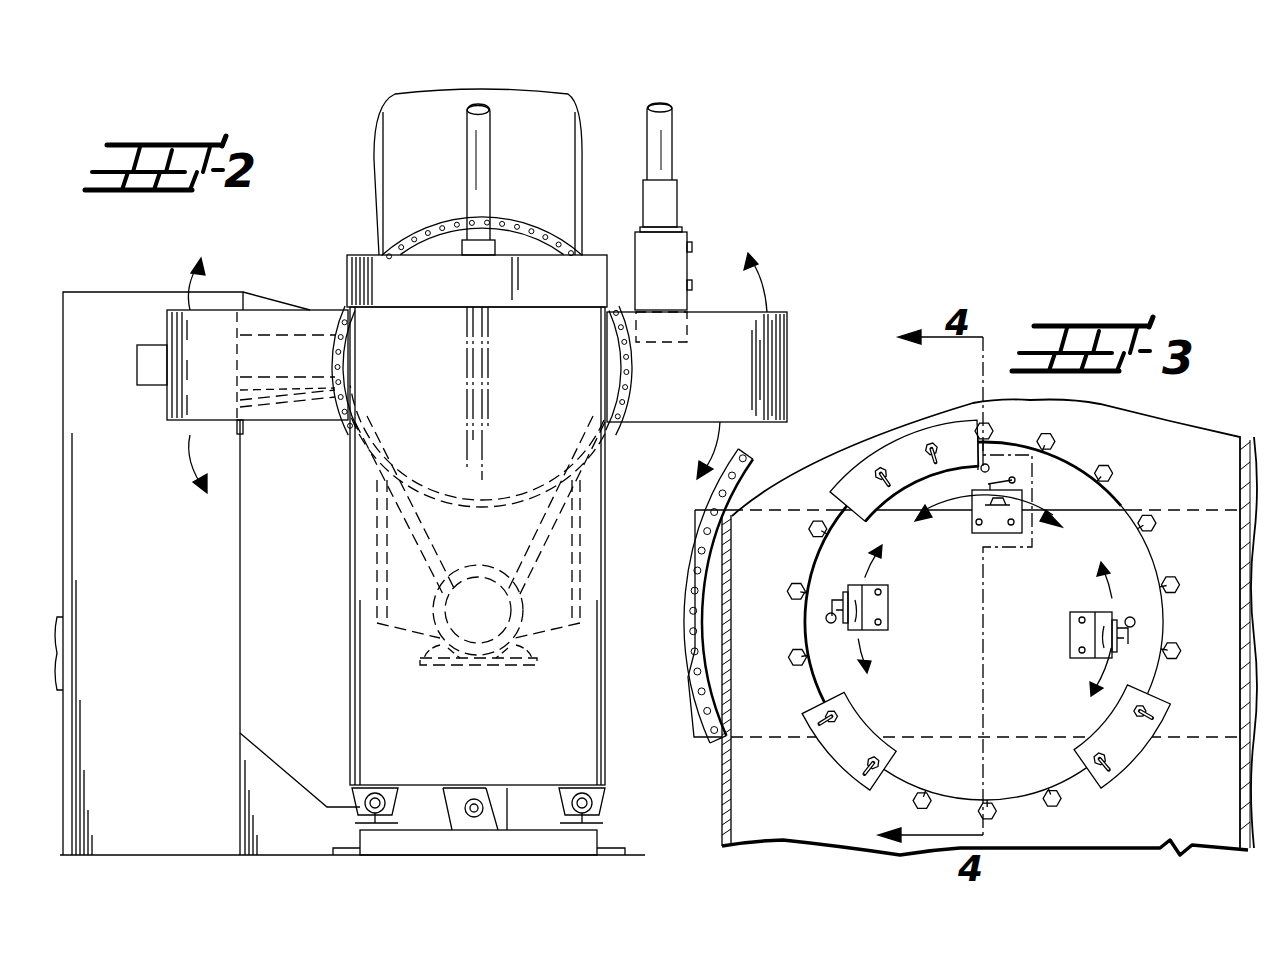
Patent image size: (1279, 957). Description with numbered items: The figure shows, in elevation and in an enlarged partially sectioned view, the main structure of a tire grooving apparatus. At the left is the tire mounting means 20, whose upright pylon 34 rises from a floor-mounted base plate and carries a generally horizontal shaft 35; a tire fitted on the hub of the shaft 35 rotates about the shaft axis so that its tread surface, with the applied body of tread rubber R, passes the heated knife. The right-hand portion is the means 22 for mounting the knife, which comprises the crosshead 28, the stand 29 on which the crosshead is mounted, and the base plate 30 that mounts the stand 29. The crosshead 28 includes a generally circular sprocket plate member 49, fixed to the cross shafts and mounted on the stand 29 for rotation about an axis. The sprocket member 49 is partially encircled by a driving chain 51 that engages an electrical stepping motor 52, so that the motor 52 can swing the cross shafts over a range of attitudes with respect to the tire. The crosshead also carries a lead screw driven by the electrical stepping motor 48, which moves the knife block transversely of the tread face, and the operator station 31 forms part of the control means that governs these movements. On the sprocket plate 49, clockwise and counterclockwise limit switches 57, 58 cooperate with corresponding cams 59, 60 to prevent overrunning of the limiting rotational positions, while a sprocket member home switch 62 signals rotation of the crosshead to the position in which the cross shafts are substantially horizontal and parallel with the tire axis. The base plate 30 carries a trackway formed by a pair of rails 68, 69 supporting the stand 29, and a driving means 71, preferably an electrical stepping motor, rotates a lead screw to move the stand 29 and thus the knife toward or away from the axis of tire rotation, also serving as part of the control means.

In FIG. 2, the tire mounting means 20 is at (150, 262).
In FIG. 2, the means for mounting the knife means 22 is at (328, 236).
In FIG. 3, the means for mounting the knife means 22 is at (1186, 416).
In FIG. 2, the crosshead 28 is at (318, 292).
In FIG. 2, the stand 29 is at (556, 400).
In FIG. 3, the stand 29 is at (722, 798).
In FIG. 2, the base plate 30 is at (456, 848).
In FIG. 2, the operator station 31 is at (700, 255).
In FIG. 2, the pylon 34 is at (160, 584).
In FIG. 2, the shaft 35 is at (302, 398).
In FIG. 2, the electrical motor 48 is at (137, 364).
In FIG. 2, the sprocket plate member 49 is at (538, 242).
In FIG. 3, the sprocket plate member 49 is at (1044, 704).
In FIG. 2, the driving chain 51 is at (398, 240).
In FIG. 3, the driving chain 51 is at (690, 586).
In FIG. 2, the electrical stepping motor 52 is at (458, 612).
In FIG. 3, the clockwise limit switch 57 is at (888, 610).
In FIG. 3, the counterclockwise limit switch 58 is at (1070, 638).
In FIG. 3, the cam 59 is at (845, 722).
In FIG. 3, the cam 60 is at (1120, 722).
In FIG. 3, the sprocket member home switch 62 is at (972, 516).
In FIG. 2, the rail 68 is at (597, 823).
In FIG. 2, the rail 69 is at (370, 823).
In FIG. 2, the driving means 71 is at (494, 815).
In FIG. 2, the tread rubber R is at (488, 90).